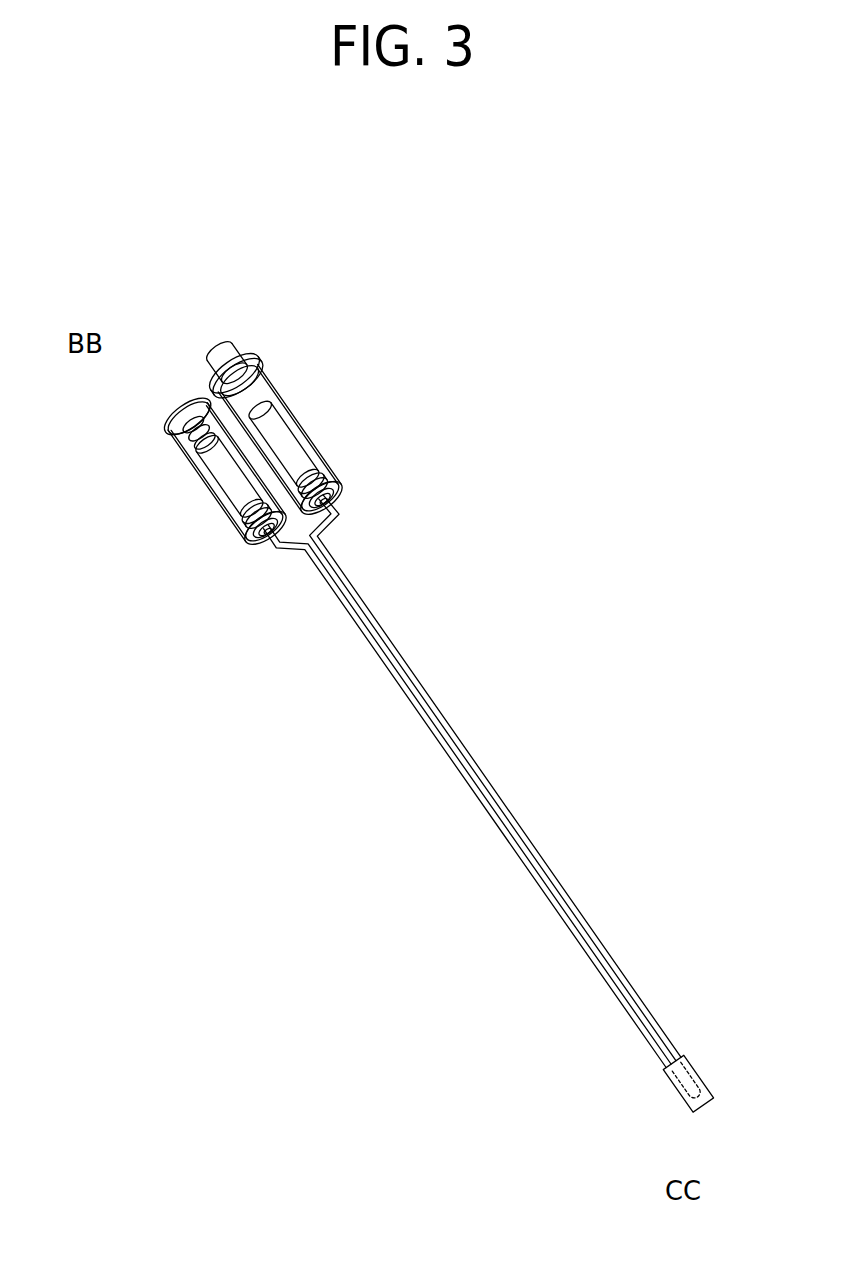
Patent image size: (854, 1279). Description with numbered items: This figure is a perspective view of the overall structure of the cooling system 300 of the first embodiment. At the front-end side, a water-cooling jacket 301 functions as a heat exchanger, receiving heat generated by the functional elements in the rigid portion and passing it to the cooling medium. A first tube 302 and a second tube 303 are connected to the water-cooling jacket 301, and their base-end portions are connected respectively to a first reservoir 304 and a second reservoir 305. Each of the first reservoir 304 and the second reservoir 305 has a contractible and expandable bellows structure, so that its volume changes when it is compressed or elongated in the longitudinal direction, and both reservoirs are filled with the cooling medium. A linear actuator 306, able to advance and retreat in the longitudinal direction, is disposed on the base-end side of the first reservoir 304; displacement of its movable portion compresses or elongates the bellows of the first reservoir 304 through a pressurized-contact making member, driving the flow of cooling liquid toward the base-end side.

The cooling system 300 is at (462, 322).
The water-cooling jacket 301 is at (663, 1087).
The first tube 302 is at (487, 782).
The second tube 303 is at (470, 777).
The first reservoir 304 is at (343, 478).
The second reservoir 305 is at (233, 532).
The linear actuator 306 is at (267, 377).